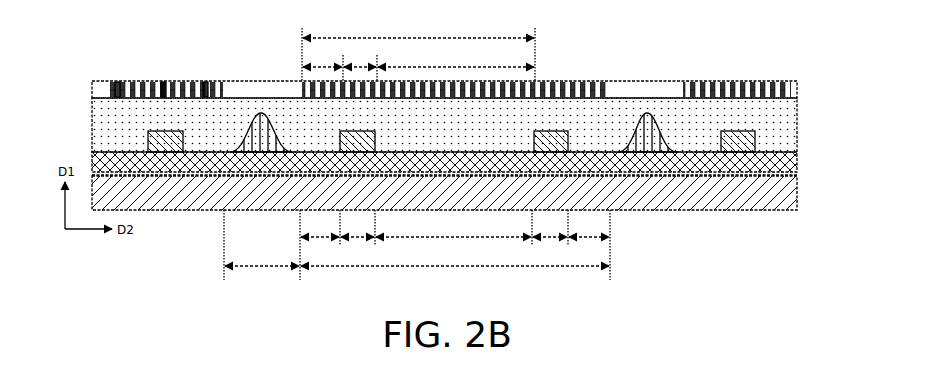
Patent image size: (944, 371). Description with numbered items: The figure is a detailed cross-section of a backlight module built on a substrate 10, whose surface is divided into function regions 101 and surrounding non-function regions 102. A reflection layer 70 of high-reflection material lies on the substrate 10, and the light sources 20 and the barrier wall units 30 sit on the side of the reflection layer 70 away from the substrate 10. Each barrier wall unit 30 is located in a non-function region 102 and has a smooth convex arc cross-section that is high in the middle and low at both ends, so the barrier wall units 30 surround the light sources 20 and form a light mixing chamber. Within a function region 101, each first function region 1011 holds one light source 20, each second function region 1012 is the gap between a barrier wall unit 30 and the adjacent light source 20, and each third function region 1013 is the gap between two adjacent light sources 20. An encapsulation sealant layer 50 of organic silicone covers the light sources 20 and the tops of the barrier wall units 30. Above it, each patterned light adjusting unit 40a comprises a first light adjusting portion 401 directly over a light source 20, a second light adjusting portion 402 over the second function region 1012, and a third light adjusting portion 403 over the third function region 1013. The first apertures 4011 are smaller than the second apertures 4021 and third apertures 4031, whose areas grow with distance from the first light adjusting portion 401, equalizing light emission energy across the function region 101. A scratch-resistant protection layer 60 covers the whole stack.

The substrate 10 is at (770, 196).
The reflection layer 70 is at (780, 166).
The encapsulation sealant layer 50 is at (780, 118).
The light source 20 is at (745, 140).
The barrier wall unit 30 is at (646, 115).
The protection layer 60 is at (97, 90).
The third aperture 4031 is at (117, 84).
The first aperture 4011 is at (163, 84).
The second aperture 4021 is at (205, 84).
The patterned light adjusting unit 40a is at (418, 30).
The second light adjusting portion 402 is at (322, 59).
The first light adjusting portion 401 is at (360, 59).
The third light adjusting portion 403 is at (456, 59).
The second function region 1012 is at (434, 229).
The first function region 1011 is at (475, 229).
The third function region 1013 is at (453, 229).
The non-function region 102 is at (262, 258).
The function region 101 is at (455, 258).